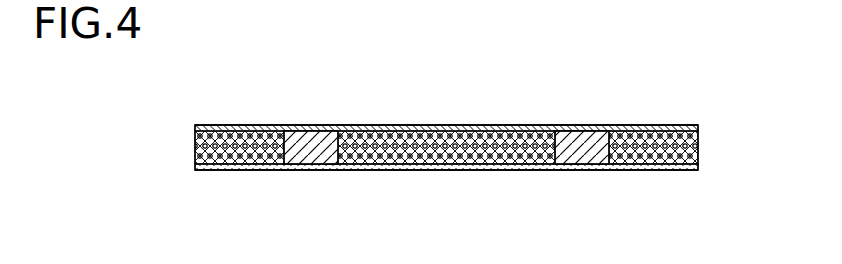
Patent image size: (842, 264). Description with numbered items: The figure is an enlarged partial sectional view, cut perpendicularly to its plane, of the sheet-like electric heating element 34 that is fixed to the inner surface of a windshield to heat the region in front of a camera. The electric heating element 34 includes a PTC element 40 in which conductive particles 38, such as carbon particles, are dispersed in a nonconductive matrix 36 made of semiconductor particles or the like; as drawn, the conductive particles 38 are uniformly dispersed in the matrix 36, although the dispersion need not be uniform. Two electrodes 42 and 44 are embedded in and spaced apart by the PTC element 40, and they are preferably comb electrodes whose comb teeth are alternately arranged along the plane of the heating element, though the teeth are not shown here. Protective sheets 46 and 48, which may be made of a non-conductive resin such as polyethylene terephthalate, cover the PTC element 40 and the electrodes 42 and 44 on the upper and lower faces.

The electric heating element 34 is at (257, 95).
The nonconductive matrix 36 is at (402, 128).
The conductive particles 38 is at (438, 172).
The PTC element 40 is at (503, 128).
The electrode 42 is at (312, 170).
The electrode 44 is at (580, 170).
The protective sheet 46 is at (645, 127).
The protective sheet 48 is at (643, 172).